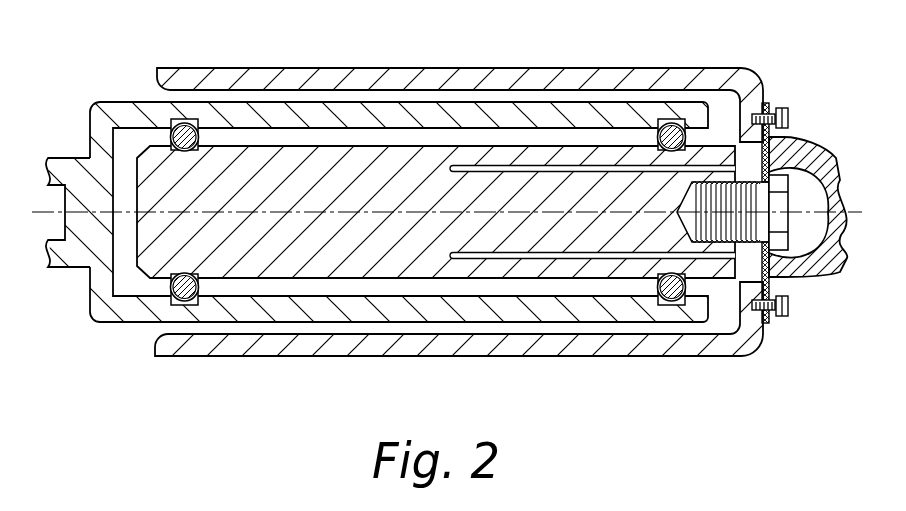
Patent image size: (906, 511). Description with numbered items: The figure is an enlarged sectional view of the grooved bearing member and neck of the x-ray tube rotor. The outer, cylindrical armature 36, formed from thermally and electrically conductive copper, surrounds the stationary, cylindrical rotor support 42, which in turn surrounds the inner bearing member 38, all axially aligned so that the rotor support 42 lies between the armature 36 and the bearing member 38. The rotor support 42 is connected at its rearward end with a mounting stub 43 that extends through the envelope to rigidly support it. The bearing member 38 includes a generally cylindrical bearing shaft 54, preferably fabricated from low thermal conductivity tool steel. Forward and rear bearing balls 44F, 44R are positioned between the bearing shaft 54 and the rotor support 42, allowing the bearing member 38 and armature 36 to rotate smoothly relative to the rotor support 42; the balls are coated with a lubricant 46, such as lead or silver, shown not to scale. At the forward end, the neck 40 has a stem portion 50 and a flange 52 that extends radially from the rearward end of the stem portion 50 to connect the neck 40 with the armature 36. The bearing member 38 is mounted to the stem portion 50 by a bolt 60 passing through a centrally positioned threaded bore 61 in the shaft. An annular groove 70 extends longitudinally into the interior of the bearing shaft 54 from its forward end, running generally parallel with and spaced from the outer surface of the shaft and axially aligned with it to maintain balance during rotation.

The armature 36 is at (453, 346).
The bearing member 38 is at (168, 177).
The neck 40 is at (828, 156).
The rotor support 42 is at (305, 312).
The mounting stub 43 is at (58, 268).
The rear bearing balls 44R is at (182, 302).
The forward bearing balls 44F is at (676, 302).
The lubricant 46 is at (206, 138).
The stem portion 50 is at (810, 276).
The flange 52 is at (777, 325).
The bearing shaft 54 is at (577, 196).
The bolt 60 is at (805, 275).
The threaded bore 61 is at (703, 218).
The annular groove 70 is at (529, 166).